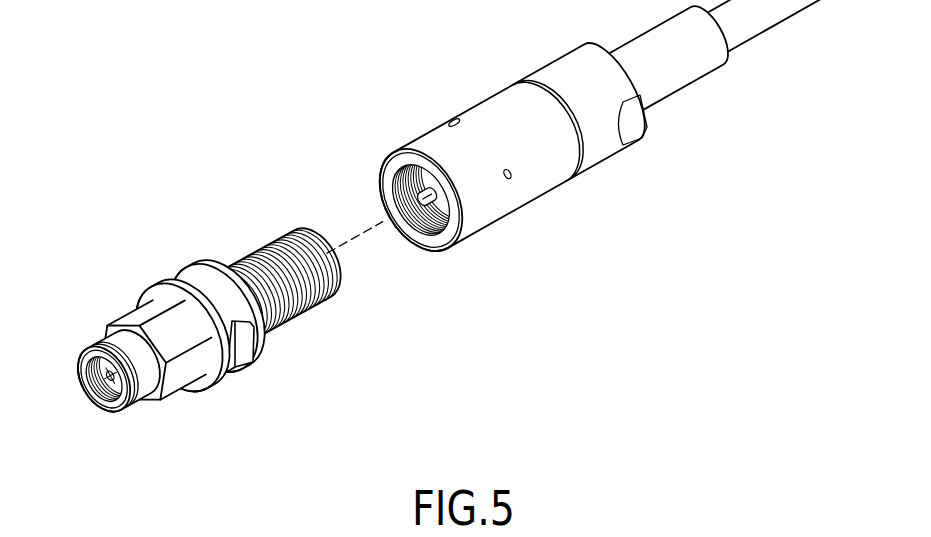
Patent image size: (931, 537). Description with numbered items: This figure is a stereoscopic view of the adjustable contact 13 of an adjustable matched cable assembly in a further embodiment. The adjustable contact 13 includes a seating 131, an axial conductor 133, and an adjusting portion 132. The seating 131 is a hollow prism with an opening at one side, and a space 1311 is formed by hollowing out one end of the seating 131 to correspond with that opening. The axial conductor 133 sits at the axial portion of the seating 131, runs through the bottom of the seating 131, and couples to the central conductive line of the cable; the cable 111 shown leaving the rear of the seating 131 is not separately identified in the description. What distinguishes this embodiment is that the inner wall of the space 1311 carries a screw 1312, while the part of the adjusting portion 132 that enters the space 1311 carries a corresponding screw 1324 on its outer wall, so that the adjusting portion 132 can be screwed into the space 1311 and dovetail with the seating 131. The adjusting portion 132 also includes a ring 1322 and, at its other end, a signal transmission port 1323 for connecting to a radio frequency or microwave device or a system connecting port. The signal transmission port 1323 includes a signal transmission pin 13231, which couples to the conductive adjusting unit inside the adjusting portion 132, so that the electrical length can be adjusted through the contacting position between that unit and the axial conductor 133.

The adjustable contact 13 is at (395, 247).
The cable 111 is at (764, 14).
The seating 131 is at (448, 108).
The space 1311 is at (393, 203).
The screw 1312 is at (403, 177).
The axial conductor 133 is at (432, 235).
The adjusting portion 132 is at (212, 324).
The screw 1324 is at (307, 305).
The ring 1322 is at (252, 360).
The signal transmission port 1323 is at (222, 385).
The signal transmission pin 13231 is at (97, 403).